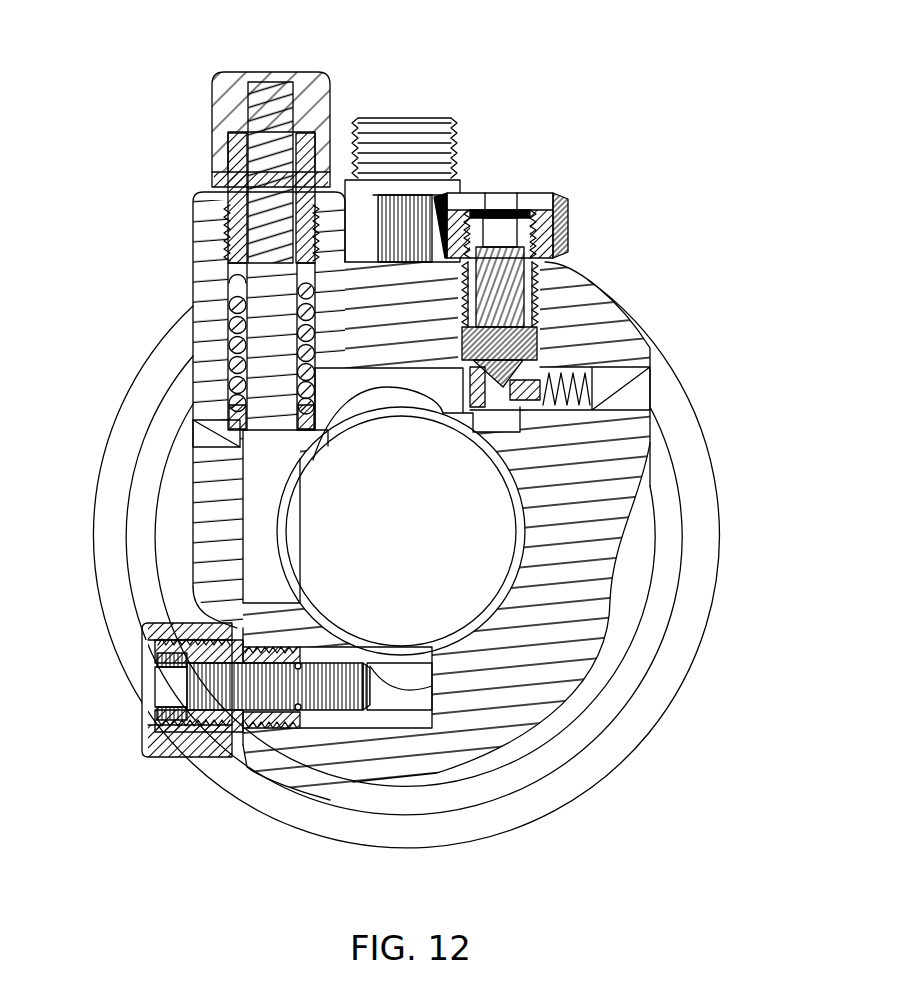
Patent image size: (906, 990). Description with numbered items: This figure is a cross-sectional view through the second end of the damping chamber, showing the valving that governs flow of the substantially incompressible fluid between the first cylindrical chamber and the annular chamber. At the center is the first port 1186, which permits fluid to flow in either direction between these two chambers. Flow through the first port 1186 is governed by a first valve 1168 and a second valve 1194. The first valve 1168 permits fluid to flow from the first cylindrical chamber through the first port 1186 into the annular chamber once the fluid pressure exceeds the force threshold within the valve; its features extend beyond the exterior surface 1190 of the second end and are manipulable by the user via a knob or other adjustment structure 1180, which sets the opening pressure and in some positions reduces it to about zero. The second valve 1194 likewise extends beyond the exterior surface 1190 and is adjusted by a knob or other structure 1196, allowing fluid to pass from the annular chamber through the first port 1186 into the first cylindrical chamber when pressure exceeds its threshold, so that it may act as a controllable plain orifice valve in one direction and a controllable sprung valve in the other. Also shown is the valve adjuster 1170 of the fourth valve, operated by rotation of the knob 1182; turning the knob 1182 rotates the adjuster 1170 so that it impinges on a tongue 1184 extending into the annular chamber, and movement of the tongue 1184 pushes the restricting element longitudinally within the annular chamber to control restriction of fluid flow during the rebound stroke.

The first valve 1168 is at (697, 372).
The valve adjuster 1170 is at (170, 766).
The adjustment structure 1180 is at (548, 193).
The knob 1182 is at (145, 735).
The tongue 1184 is at (412, 690).
The first port 1186 is at (333, 392).
The exterior surface 1190 is at (192, 493).
The second valve 1194 is at (121, 355).
The adjustment structure 1196 is at (230, 80).